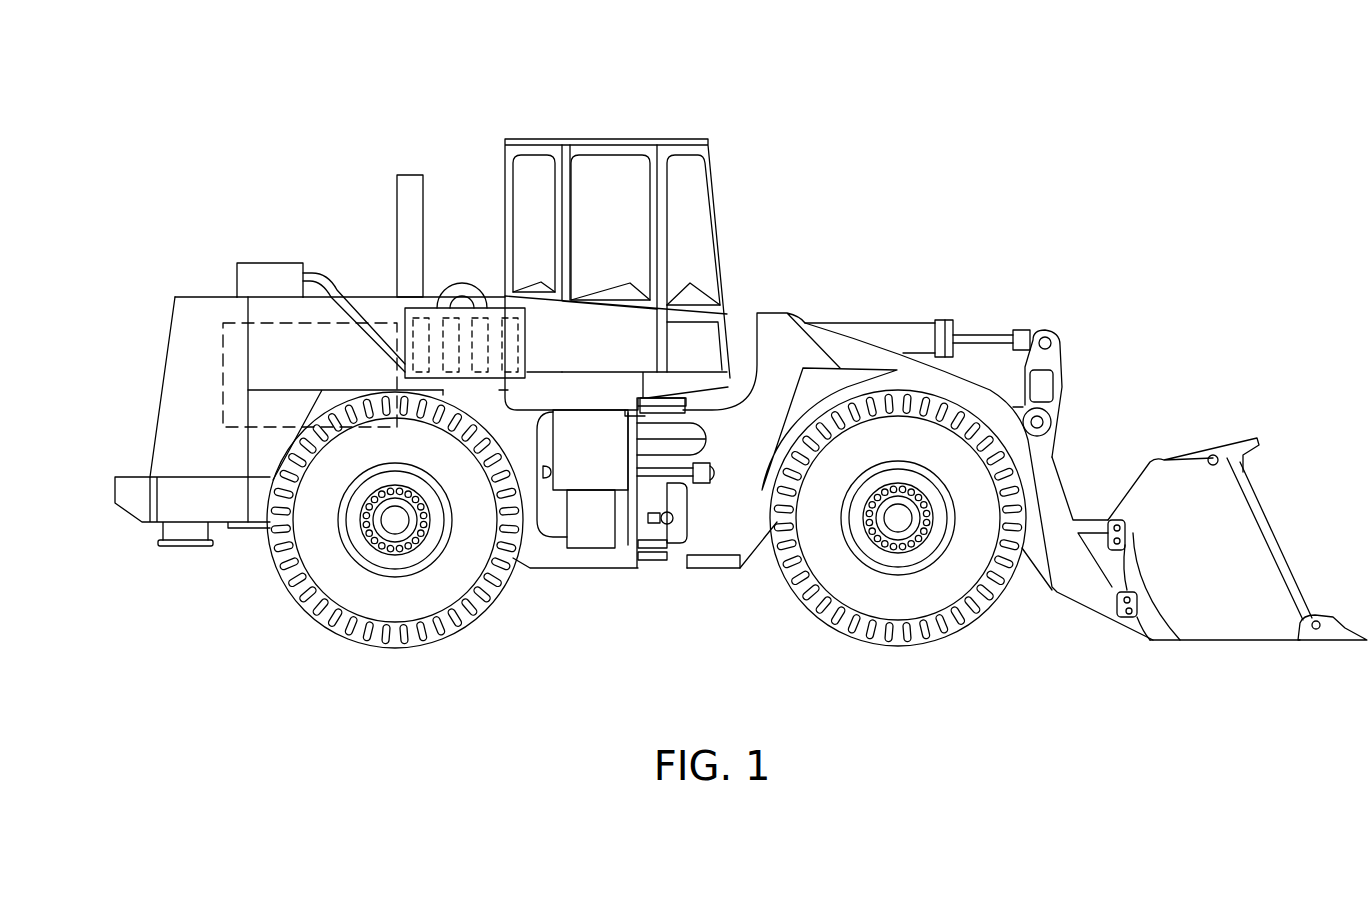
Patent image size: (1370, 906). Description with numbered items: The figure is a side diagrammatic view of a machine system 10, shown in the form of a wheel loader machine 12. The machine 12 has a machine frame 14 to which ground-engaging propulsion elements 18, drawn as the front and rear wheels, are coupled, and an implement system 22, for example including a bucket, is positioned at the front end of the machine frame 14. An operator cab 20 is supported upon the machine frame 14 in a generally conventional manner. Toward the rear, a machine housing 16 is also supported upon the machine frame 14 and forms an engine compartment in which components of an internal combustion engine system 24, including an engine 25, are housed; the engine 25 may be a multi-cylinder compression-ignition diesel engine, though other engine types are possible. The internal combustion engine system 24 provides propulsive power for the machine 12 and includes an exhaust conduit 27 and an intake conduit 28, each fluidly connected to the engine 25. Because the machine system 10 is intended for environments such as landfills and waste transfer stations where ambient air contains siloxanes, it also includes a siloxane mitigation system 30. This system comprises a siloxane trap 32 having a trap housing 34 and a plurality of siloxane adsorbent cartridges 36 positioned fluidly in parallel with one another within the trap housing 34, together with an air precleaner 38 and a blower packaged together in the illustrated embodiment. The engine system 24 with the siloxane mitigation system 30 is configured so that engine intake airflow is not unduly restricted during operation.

The machine system 10 is at (1012, 101).
The machine 12 is at (175, 297).
The machine frame 14 is at (128, 484).
The machine housing 16 is at (172, 348).
The wheels 18 is at (375, 642).
The operator cab 20 is at (712, 168).
The implement system 22 is at (1308, 465).
The internal combustion engine system 24 is at (205, 414).
The engine 25 is at (223, 430).
The exhaust conduit 27 is at (396, 205).
The intake conduit 28 is at (348, 300).
The siloxane mitigation system 30 is at (548, 318).
The siloxane trap 32 is at (546, 357).
The trap housing 34 is at (503, 392).
The siloxane adsorbent cartridges 36 is at (527, 376).
The air precleaner 38 is at (268, 263).